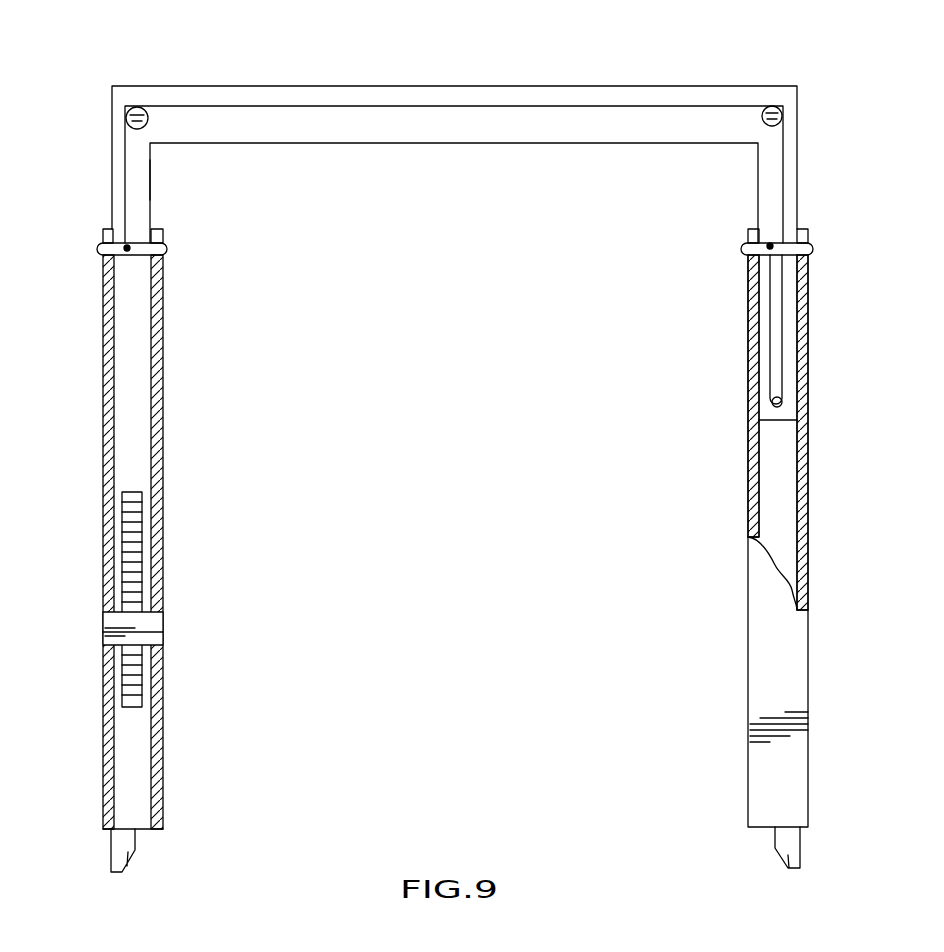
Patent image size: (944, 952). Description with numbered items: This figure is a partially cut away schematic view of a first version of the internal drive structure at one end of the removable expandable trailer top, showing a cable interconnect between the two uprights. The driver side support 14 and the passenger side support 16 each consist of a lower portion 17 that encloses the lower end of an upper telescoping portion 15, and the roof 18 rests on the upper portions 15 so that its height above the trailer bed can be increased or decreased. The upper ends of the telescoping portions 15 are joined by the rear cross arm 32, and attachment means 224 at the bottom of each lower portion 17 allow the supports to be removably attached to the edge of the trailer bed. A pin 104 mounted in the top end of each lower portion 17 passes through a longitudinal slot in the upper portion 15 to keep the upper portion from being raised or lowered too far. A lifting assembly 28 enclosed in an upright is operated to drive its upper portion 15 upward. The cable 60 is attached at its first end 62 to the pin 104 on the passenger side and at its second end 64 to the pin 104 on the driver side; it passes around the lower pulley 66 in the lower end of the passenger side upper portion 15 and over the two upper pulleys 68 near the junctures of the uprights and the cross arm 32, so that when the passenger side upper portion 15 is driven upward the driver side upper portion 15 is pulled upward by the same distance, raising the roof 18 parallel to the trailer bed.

The driver side support 14 is at (160, 323).
The upper telescoping portion 15 is at (145, 160).
The passenger side support 16 is at (748, 472).
The lower portion 17 is at (160, 402).
The roof 18 is at (300, 86).
The lifting assembly 28 is at (155, 627).
The rear cross arm 32 is at (420, 128).
The cable 60 is at (595, 106).
The first end 62 is at (770, 246).
The second end 64 is at (127, 248).
The lower pulley 66 is at (786, 404).
The upper pulley 68 is at (142, 117).
The pin 104 is at (162, 247).
The attachment means 224 is at (127, 853).